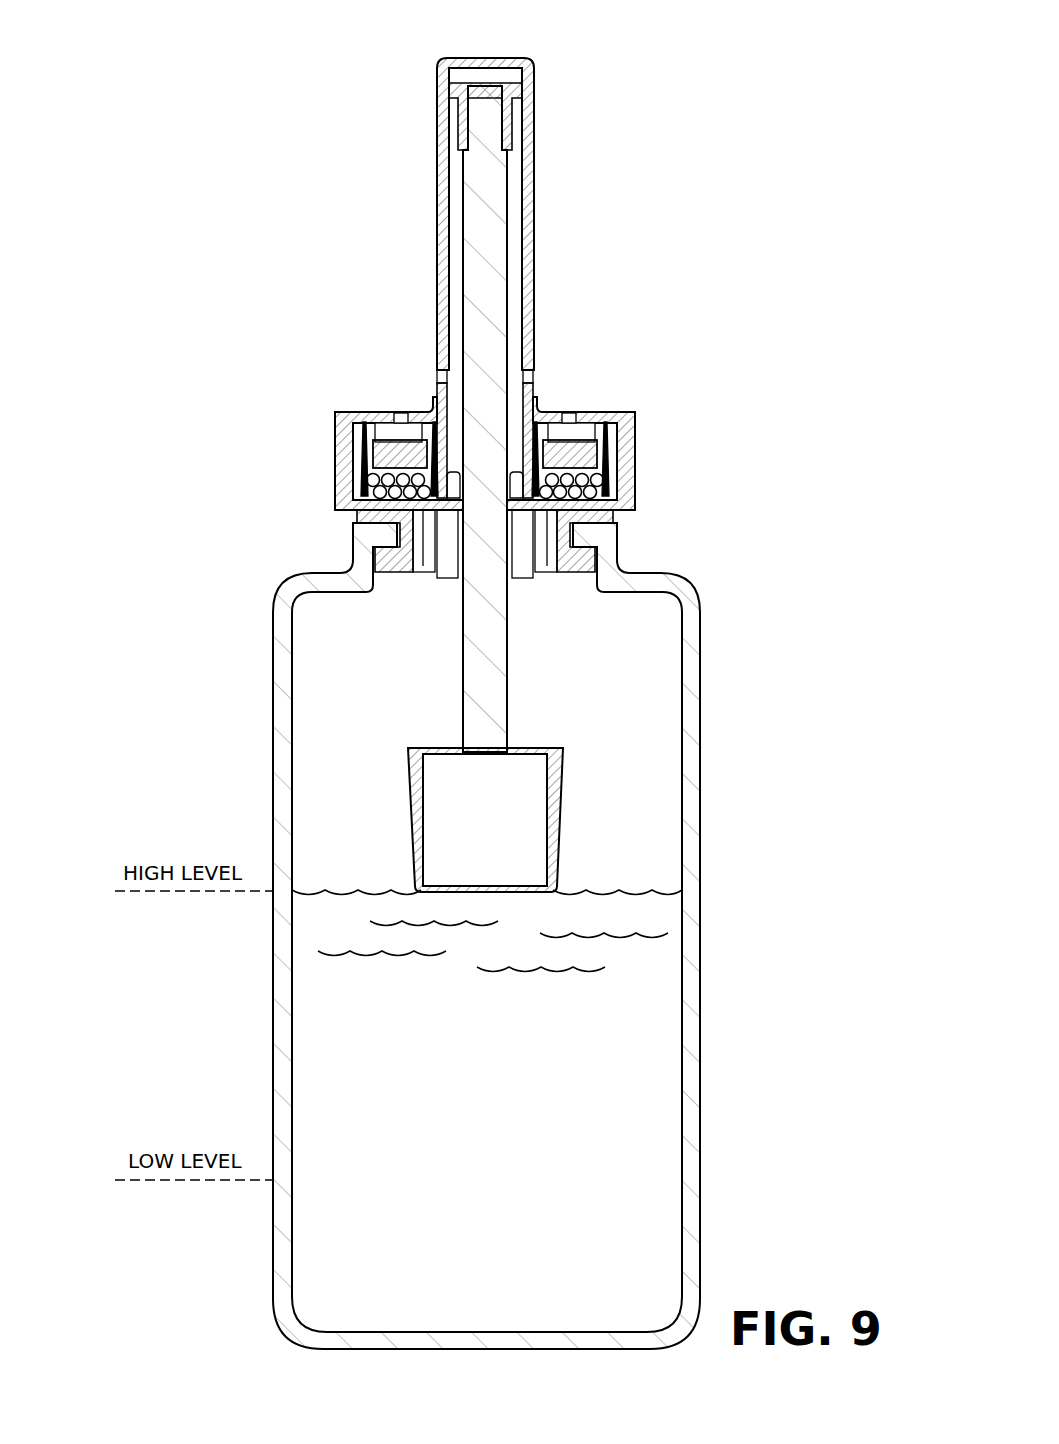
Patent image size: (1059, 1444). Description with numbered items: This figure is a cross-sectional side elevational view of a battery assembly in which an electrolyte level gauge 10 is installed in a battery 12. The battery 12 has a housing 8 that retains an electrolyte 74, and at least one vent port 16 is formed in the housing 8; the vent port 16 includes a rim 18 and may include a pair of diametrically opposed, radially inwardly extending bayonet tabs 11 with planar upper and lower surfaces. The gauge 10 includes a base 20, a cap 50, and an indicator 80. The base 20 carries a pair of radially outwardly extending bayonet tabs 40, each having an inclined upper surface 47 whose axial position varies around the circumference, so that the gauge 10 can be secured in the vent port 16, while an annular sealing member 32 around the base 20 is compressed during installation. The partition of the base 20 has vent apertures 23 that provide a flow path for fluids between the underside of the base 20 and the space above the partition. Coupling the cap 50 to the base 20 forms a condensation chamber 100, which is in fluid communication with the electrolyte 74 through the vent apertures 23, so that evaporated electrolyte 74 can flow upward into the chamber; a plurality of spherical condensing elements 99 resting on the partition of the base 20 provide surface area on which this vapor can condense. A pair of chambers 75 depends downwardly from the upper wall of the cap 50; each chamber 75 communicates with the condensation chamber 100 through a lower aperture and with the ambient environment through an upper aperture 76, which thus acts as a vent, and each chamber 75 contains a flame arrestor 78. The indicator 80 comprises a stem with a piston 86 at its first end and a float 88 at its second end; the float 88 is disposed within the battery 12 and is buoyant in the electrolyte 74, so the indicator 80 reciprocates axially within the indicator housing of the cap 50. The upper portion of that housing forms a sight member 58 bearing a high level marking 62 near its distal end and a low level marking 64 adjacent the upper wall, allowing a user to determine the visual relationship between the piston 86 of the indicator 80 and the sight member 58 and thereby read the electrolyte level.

The housing 8 is at (698, 606).
The electrolyte level gauge 10 is at (546, 305).
The bayonet tabs 11 is at (383, 538).
The battery 12 is at (225, 287).
The vent port 16 is at (608, 537).
The rim 18 is at (358, 517).
The base 20 is at (335, 416).
The vent apertures 23 is at (423, 512).
The annular sealing member 32 is at (588, 517).
The bayonet tabs 40 is at (393, 568).
The upper surface 47 is at (376, 545).
The cap 50 is at (428, 292).
The sight member 58 is at (532, 160).
The high level marking 62 is at (447, 92).
The low level marking 64 is at (534, 385).
The electrolyte 74 is at (500, 1026).
The chambers 75 is at (400, 433).
The upper aperture 76 is at (575, 415).
The flame arrestor 78 is at (397, 443).
The indicator 80 is at (475, 207).
The piston 86 is at (460, 133).
The float 88 is at (455, 750).
The condensing elements 99 is at (603, 488).
The condensation chamber 100 is at (363, 478).